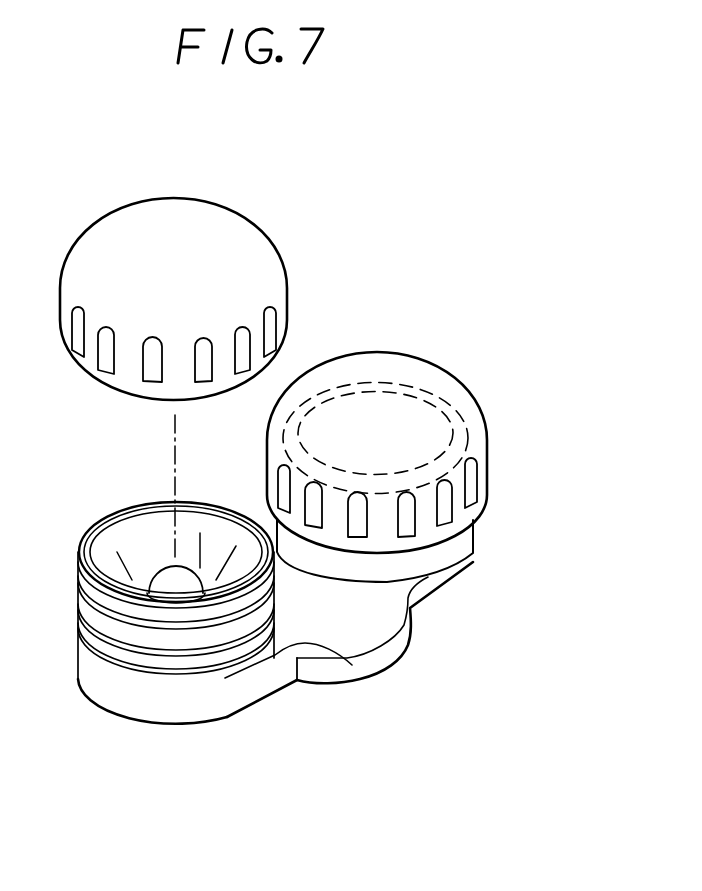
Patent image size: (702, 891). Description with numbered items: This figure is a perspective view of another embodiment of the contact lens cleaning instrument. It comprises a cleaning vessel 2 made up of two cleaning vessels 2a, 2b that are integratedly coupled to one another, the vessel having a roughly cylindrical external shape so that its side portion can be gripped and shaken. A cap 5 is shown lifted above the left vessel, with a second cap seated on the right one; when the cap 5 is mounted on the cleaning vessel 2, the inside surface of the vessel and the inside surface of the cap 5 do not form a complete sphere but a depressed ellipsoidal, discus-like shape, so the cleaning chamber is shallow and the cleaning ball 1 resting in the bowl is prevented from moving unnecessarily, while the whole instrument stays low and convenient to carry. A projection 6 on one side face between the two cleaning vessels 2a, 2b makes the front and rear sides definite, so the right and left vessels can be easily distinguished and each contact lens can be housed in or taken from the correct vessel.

The cleaning ball 1 is at (160, 567).
The cleaning vessel 2 is at (431, 571).
The cleaning vessel 2a is at (352, 665).
The cleaning vessel 2b is at (442, 555).
The cap 5 is at (222, 227).
The projection 6 is at (318, 672).